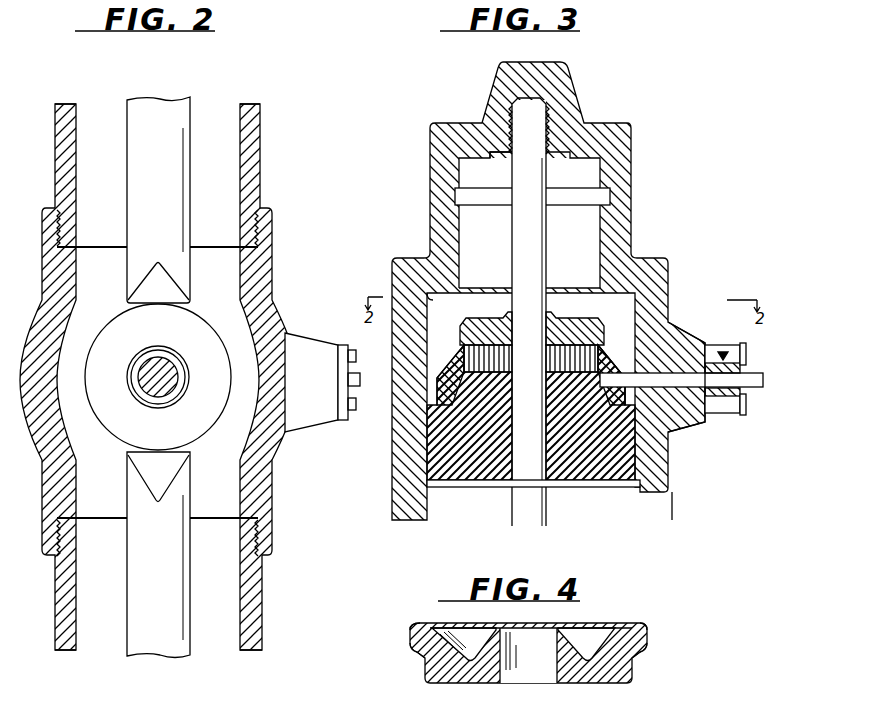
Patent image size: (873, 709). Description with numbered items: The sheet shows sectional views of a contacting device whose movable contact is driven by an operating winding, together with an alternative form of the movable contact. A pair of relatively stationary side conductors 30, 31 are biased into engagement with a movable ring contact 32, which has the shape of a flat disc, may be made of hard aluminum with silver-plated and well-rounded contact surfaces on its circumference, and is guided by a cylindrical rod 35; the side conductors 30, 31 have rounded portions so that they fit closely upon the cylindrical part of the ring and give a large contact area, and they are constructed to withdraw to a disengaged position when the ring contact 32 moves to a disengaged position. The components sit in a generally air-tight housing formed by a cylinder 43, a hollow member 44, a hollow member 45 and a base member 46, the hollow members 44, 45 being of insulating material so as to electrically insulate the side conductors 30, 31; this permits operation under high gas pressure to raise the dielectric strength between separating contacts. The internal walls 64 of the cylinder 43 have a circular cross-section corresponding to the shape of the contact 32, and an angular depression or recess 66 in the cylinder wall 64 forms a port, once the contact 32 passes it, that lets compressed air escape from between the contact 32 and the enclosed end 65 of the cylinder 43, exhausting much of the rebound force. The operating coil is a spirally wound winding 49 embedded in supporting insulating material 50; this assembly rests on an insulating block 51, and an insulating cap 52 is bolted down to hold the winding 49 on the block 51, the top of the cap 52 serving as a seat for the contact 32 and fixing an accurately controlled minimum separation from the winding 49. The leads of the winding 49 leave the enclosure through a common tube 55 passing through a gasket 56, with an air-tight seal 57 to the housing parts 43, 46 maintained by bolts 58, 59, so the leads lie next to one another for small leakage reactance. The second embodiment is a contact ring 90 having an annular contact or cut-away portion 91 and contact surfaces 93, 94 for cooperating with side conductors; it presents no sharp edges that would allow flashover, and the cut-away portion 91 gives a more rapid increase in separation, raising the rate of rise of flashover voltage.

In FIG. 2, the side conductor 30 is at (144, 575).
In FIG. 2, the side conductor 31 is at (144, 227).
In FIG. 2, the movable ring contact 32 is at (203, 322).
In FIG. 3, the movable ring contact 32 is at (566, 324).
In FIG. 2, the cylindrical rod 35 is at (165, 362).
In FIG. 3, the cylindrical rod 35 is at (549, 247).
In FIG. 2, the cylinder 43 is at (45, 315).
In FIG. 3, the cylinder 43 is at (670, 285).
In FIG. 2, the hollow member 44 is at (262, 158).
In FIG. 2, the hollow member 45 is at (255, 608).
In FIG. 3, the base member 46 is at (692, 494).
In FIG. 3, the spirally wound winding 49 is at (531, 373).
In FIG. 3, the supporting insulating material 50 is at (531, 375).
In FIG. 3, the insulating block 51 is at (464, 446).
In FIG. 3, the insulating cap 52 is at (608, 362).
In FIG. 3, the common tube 55 is at (652, 362).
In FIG. 2, the gasket 56 is at (356, 375).
In FIG. 3, the gasket 56 is at (741, 374).
In FIG. 3, the air-tight seal 57 is at (739, 347).
In FIG. 3, the bolt 58 is at (724, 352).
In FIG. 3, the bolt 59 is at (726, 415).
In FIG. 3, the cylinder wall 64 is at (462, 259).
In FIG. 3, the enclosed end 65 is at (495, 167).
In FIG. 3, the angular depression 66 is at (468, 206).
In FIG. 4, the contact ring 90 is at (530, 631).
In FIG. 4, the annular contact 91 is at (423, 657).
In FIG. 4, the contact surface 93 is at (410, 634).
In FIG. 4, the contact surface 94 is at (648, 638).